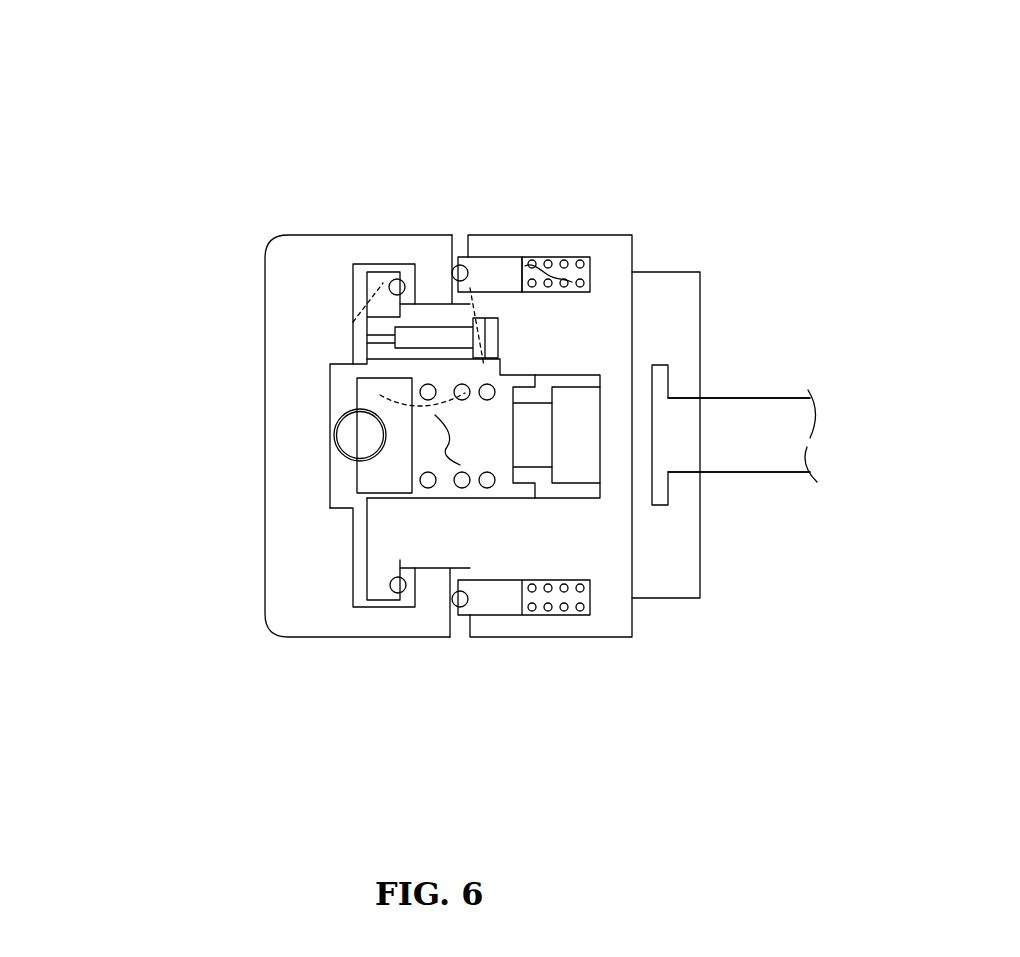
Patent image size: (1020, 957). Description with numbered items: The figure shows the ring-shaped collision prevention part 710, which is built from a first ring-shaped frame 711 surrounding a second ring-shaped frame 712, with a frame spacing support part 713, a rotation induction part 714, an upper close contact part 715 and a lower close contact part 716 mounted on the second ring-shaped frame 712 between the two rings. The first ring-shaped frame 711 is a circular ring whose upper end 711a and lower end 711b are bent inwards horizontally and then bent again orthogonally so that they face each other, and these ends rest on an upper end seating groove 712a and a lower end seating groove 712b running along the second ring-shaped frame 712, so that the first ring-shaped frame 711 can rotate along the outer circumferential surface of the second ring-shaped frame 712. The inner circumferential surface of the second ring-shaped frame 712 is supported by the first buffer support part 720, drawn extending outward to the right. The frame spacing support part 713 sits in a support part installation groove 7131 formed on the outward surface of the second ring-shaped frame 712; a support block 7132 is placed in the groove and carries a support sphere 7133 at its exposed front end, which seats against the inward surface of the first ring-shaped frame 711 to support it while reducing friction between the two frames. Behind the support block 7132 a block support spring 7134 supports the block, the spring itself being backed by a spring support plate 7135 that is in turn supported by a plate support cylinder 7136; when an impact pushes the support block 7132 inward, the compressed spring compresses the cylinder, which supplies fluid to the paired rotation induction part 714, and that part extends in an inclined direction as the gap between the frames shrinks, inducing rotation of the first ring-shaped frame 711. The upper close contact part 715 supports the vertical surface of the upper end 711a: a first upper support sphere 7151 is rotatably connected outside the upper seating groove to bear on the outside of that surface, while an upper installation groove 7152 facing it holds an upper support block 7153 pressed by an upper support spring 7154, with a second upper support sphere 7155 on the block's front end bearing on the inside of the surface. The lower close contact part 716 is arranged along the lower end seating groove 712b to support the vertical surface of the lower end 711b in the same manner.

The ring-shaped collision prevention part 710 is at (161, 63).
The first ring-shaped frame 711 is at (267, 262).
The upper end 711a is at (423, 238).
The lower end 711b is at (414, 635).
The second ring-shaped frame 712 is at (623, 250).
The upper end seating groove 712a is at (432, 268).
The lower end seating groove 712b is at (455, 593).
The frame spacing support part 713 is at (95, 331).
The support part installation groove 7131 is at (447, 447).
The support block 7132 is at (362, 389).
The support sphere 7133 is at (338, 428).
The block support spring 7134 is at (505, 482).
The spring support plate 7135 is at (442, 484).
The plate support cylinder 7136 is at (565, 483).
The rotation induction part 714 is at (392, 329).
The upper close contact part 715 is at (680, 68).
The first upper support sphere 7151 is at (396, 277).
The upper installation groove 7152 is at (548, 263).
The upper support block 7153 is at (502, 263).
The upper support spring 7154 is at (582, 263).
The second upper support sphere 7155 is at (458, 264).
The lower close contact part 716 is at (510, 608).
The first buffer support part 720 is at (747, 478).